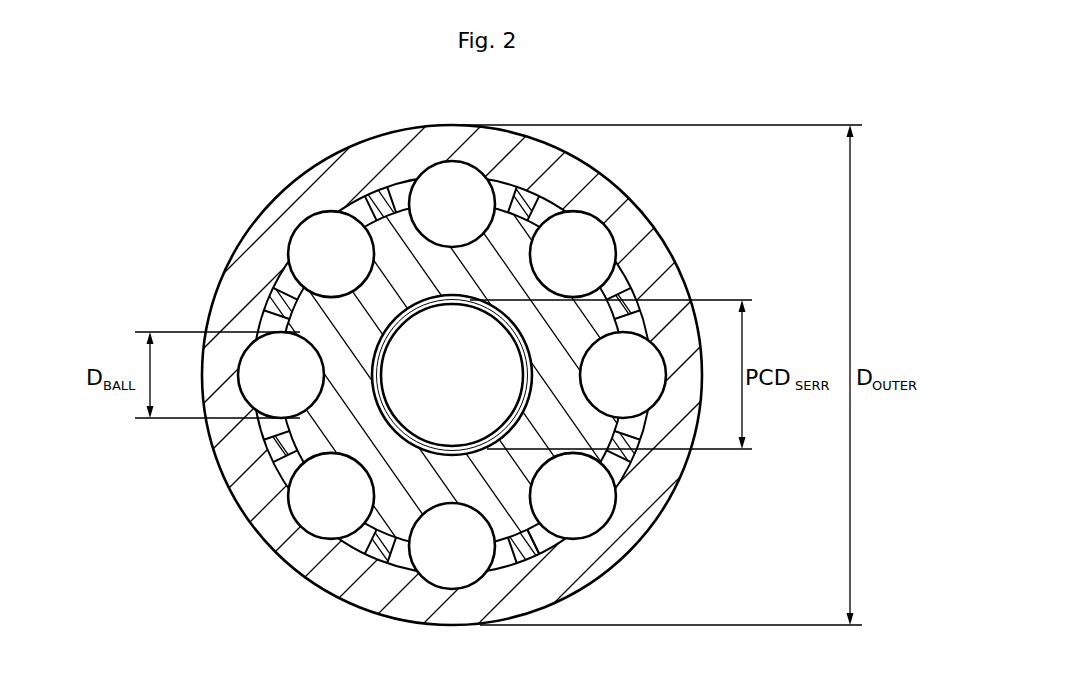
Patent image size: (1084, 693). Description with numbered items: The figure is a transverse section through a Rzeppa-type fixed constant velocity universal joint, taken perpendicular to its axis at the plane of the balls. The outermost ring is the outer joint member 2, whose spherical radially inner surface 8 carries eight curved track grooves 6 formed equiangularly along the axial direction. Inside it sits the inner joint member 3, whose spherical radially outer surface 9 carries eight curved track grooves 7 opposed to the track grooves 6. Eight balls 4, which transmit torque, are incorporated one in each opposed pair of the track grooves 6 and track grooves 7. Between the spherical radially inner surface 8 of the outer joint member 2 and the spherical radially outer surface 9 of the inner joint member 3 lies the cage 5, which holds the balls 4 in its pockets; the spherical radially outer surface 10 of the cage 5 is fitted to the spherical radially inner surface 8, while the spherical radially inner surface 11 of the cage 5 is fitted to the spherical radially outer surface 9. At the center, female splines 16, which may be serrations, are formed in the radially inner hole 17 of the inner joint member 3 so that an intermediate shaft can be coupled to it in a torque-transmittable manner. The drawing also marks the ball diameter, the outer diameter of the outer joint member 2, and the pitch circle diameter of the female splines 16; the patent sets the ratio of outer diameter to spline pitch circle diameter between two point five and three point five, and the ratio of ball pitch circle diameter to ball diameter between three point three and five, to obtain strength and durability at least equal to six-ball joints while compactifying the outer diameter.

The outer joint member 2 is at (334, 150).
The inner joint member 3 is at (332, 411).
The balls 4 is at (482, 162).
The cage 5 is at (365, 558).
The track grooves 6 is at (456, 164).
The track grooves 7 is at (340, 295).
The spherical radially inner surface 8 is at (417, 190).
The spherical radially outer surface 9 is at (262, 327).
The spherical radially outer surface 10 is at (528, 558).
The spherical radially inner surface 11 is at (525, 512).
The female splines 16 is at (457, 445).
The radially inner hole 17 is at (518, 345).